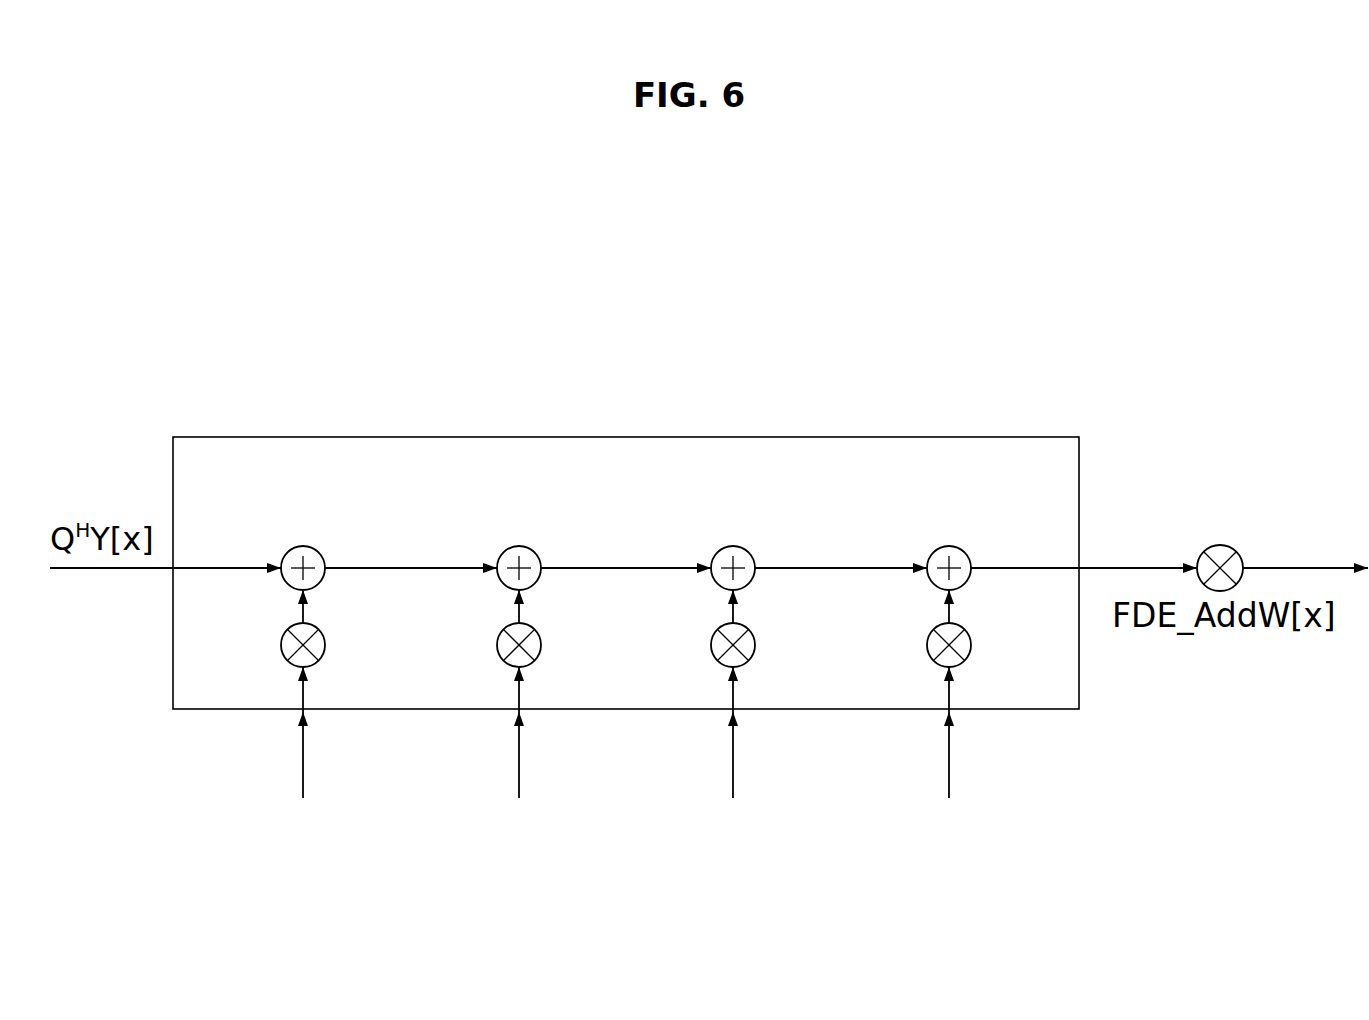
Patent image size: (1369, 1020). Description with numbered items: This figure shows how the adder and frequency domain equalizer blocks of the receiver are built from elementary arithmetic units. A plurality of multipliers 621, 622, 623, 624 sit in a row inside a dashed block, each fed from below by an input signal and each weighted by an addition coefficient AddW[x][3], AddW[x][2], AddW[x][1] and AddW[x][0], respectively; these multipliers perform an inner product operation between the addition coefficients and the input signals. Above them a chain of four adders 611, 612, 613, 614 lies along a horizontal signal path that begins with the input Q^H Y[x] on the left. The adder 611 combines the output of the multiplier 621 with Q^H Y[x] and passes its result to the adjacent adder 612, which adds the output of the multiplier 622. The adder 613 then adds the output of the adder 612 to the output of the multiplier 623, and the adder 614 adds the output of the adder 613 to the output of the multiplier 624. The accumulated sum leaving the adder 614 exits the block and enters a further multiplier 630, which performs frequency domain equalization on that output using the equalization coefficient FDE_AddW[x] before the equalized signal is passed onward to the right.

The adder 611 is at (303, 546).
The adder 612 is at (519, 546).
The adder 613 is at (733, 546).
The adder 614 is at (949, 546).
The multiplier 621 is at (324, 648).
The multiplier 622 is at (540, 648).
The multiplier 623 is at (754, 648).
The multiplier 624 is at (970, 648).
The multiplier 630 is at (1220, 545).